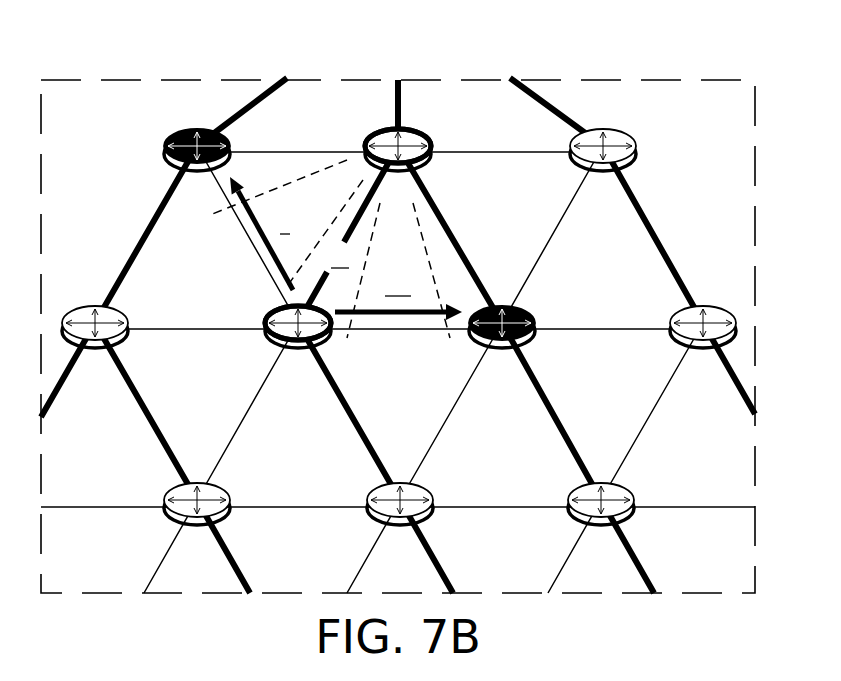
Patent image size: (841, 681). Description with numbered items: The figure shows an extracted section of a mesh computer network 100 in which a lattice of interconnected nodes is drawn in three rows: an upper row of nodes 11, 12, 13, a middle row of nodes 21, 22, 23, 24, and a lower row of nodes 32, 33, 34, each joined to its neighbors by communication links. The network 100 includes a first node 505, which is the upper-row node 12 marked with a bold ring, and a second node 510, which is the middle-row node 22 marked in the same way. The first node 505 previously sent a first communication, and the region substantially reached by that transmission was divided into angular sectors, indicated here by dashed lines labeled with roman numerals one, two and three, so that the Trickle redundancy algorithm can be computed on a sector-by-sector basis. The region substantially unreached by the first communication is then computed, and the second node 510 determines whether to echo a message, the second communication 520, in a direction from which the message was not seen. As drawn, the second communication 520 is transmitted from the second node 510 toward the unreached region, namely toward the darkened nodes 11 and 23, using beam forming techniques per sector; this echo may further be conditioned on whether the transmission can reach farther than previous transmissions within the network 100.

The computer network 100 is at (701, 55).
The node 11 is at (197, 172).
The node 12 is at (398, 172).
The node 13 is at (603, 172).
The node 21 is at (95, 347).
The node 22 is at (298, 347).
The node 23 is at (502, 347).
The node 24 is at (703, 347).
The node 32 is at (197, 524).
The node 33 is at (400, 524).
The node 34 is at (601, 524).
The first node 505 is at (426, 124).
The second node 510 is at (262, 354).
The second communication 520 is at (385, 361).